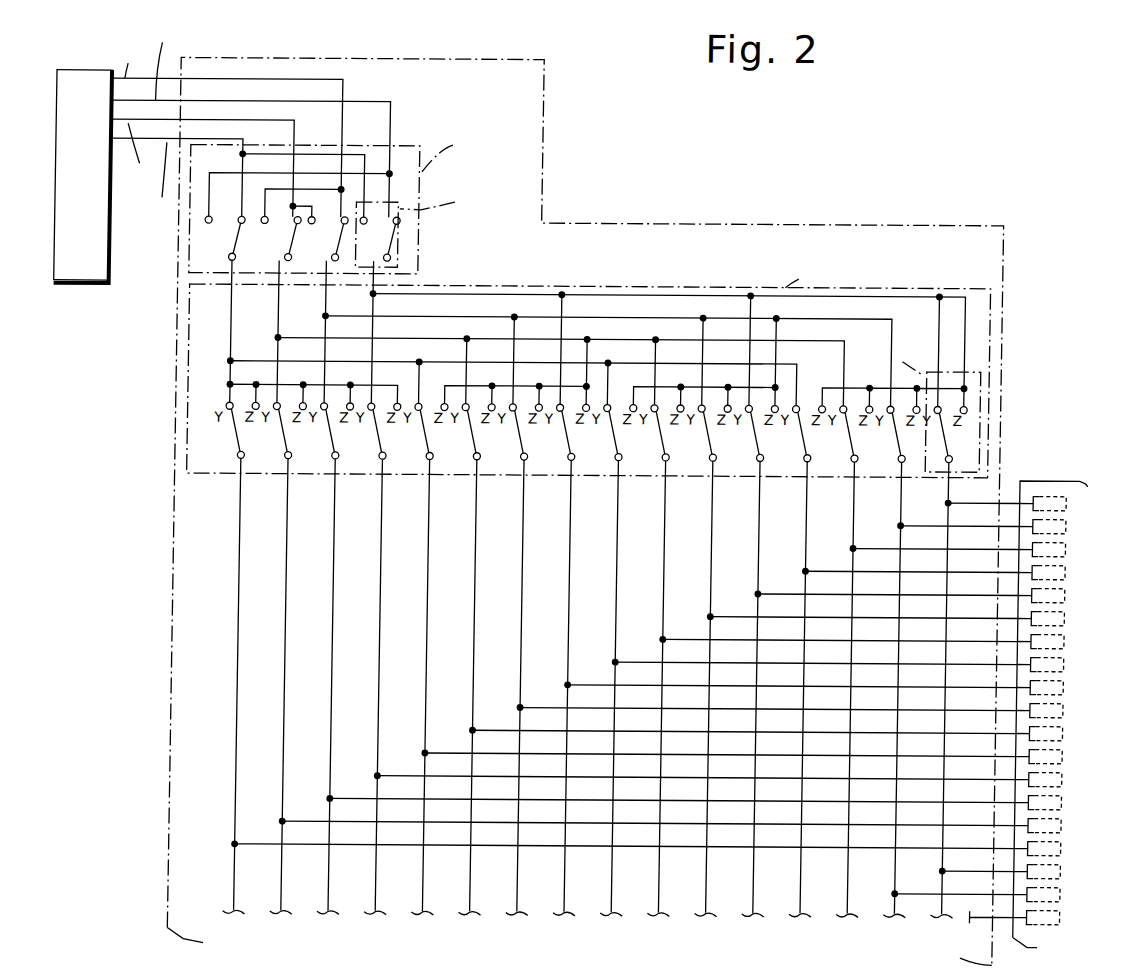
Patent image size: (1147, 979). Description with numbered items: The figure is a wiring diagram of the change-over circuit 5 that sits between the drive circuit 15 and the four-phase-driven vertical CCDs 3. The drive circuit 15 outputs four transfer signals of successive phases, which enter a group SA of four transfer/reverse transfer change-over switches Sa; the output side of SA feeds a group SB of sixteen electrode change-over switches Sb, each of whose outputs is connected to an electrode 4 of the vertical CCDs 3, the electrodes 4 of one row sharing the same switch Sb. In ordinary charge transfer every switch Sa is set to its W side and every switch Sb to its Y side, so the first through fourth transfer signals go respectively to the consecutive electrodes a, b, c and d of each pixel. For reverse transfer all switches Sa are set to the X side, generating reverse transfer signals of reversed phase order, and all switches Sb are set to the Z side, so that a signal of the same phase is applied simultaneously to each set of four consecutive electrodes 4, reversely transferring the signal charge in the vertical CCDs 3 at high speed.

The drive circuit 15 is at (80, 286).
The change-over circuit 5 is at (658, 224).
The vertical CCDs 3 is at (1088, 484).
The electrode 4 is at (1046, 493).